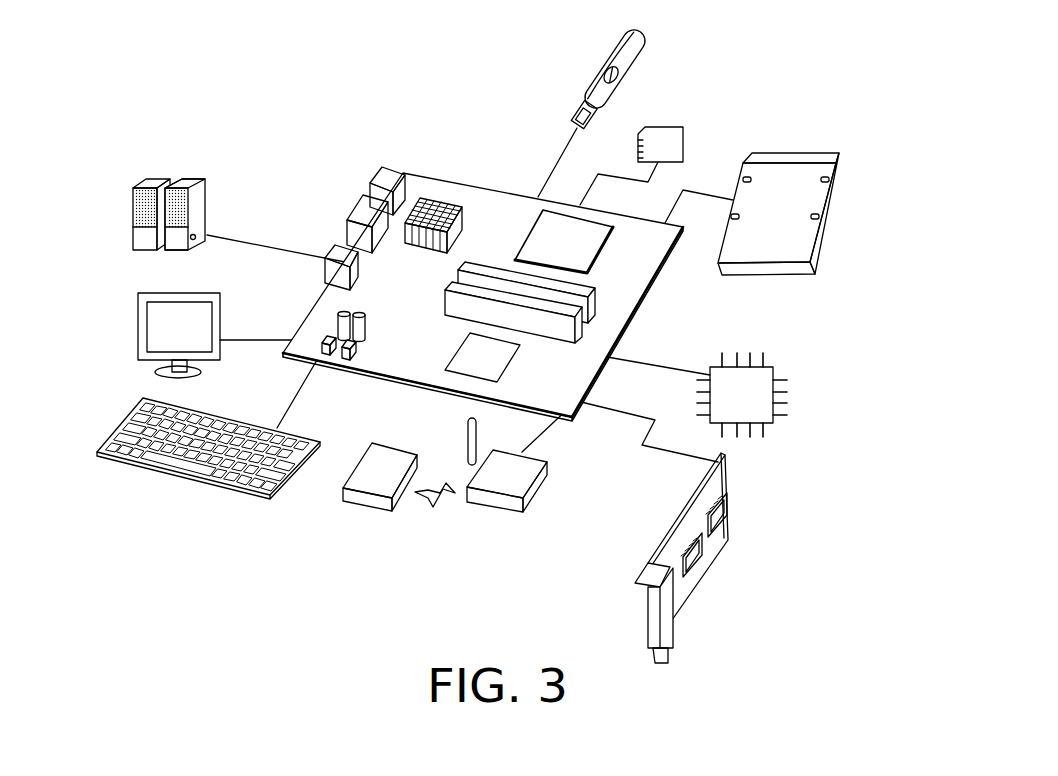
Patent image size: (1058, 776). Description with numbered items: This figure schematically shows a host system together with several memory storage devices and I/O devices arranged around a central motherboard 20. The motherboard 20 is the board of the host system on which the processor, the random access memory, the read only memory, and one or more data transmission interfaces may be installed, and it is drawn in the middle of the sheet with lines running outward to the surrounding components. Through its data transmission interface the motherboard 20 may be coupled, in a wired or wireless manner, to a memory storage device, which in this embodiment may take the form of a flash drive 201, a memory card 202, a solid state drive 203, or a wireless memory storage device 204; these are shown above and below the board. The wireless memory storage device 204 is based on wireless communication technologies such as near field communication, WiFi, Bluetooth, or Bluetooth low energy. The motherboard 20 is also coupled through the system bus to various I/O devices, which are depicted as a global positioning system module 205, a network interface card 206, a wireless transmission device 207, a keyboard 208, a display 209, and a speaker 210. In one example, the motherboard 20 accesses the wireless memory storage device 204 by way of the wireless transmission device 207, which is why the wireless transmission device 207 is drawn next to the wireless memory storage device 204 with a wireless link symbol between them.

The motherboard 20 is at (481, 202).
The flash drive 201 is at (592, 68).
The memory card 202 is at (677, 138).
The solid state drive 203 is at (830, 200).
The wireless memory storage device 204 is at (360, 473).
The global positioning system module 205 is at (777, 368).
The network interface card 206 is at (727, 547).
The wireless transmission device 207 is at (538, 485).
The keyboard 208 is at (130, 413).
The display 209 is at (138, 317).
The speaker 210 is at (133, 230).